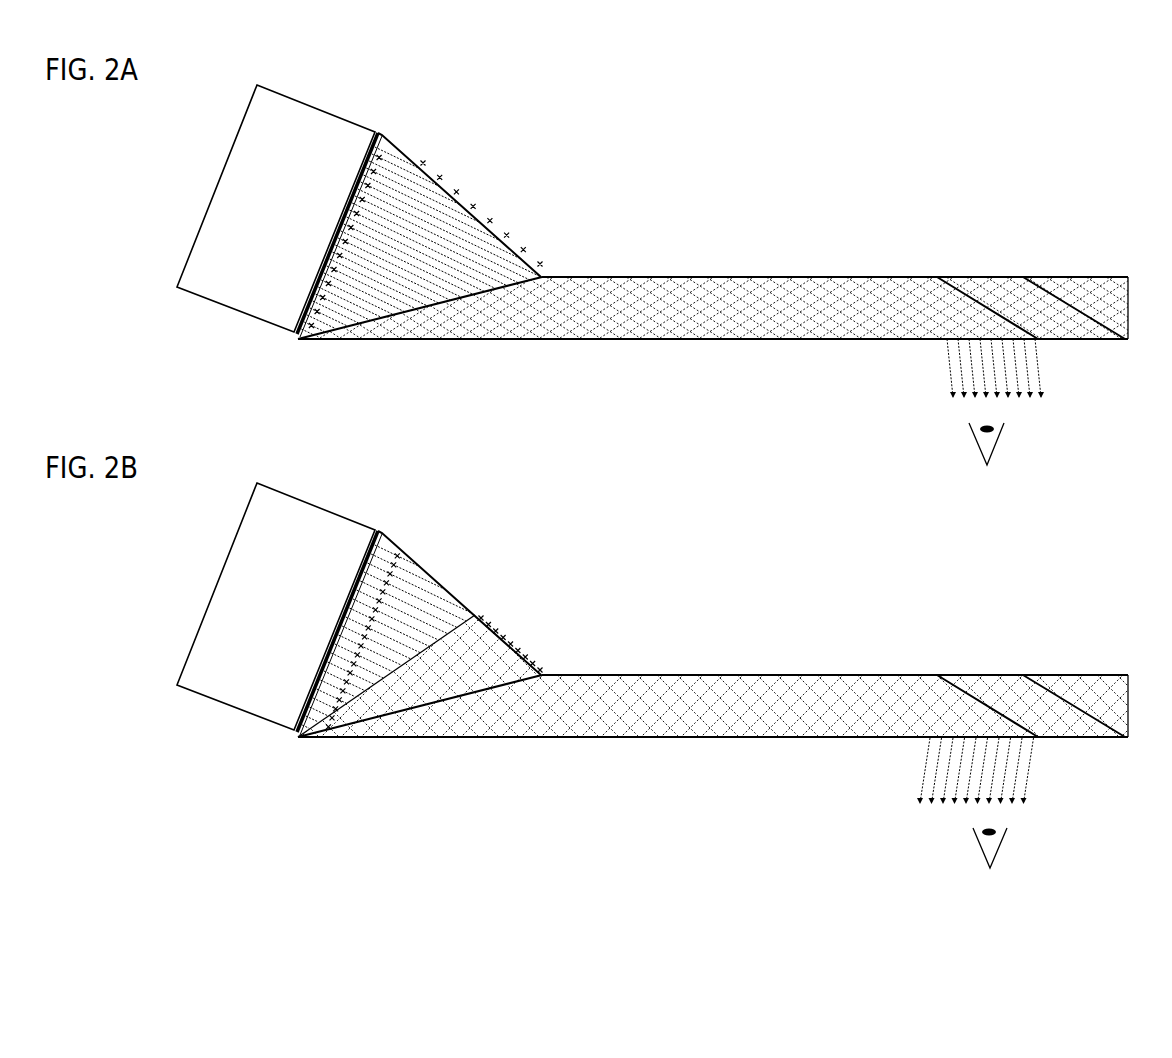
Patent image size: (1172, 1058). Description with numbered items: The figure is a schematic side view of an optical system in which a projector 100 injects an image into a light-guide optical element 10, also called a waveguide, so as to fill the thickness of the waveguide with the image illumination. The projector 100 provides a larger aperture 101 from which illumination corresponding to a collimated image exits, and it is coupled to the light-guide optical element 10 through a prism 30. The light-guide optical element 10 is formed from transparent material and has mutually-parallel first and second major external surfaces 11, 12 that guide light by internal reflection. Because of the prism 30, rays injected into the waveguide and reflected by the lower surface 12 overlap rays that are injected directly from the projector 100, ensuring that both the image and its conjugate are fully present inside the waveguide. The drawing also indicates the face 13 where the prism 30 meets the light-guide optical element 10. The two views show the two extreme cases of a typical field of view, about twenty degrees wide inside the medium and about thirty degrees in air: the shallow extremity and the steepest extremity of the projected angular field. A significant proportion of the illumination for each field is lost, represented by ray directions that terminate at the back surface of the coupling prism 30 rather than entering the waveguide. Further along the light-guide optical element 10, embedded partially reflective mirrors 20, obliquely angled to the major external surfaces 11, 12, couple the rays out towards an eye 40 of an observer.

In FIG. 2A, the projector 100 is at (228, 158).
In FIG. 2B, the projector 100 is at (261, 606).
In FIG. 2A, the aperture 101 is at (295, 318).
In FIG. 2B, the aperture 101 is at (311, 650).
In FIG. 2A, the prism 30 is at (394, 150).
In FIG. 2B, the prism 30 is at (420, 623).
In FIG. 2A, the light-guide optical element 10 is at (497, 328).
In FIG. 2B, the light-guide optical element 10 is at (713, 725).
In FIG. 2A, the first major external surface 11 is at (612, 277).
In FIG. 2B, the first major external surface 11 is at (835, 654).
In FIG. 2A, the second major external surface 12 is at (610, 339).
In FIG. 2B, the second major external surface 12 is at (713, 732).
In FIG. 2A, the input face of waveguide 13 is at (515, 278).
In FIG. 2B, the input face of waveguide 13 is at (427, 679).
In FIG. 2A, the partially reflective mirrors 20 is at (1053, 283).
In FIG. 2B, the partially reflective mirrors 20 is at (1021, 722).
In FIG. 2A, the eye 40 is at (975, 443).
In FIG. 2B, the eye 40 is at (958, 863).